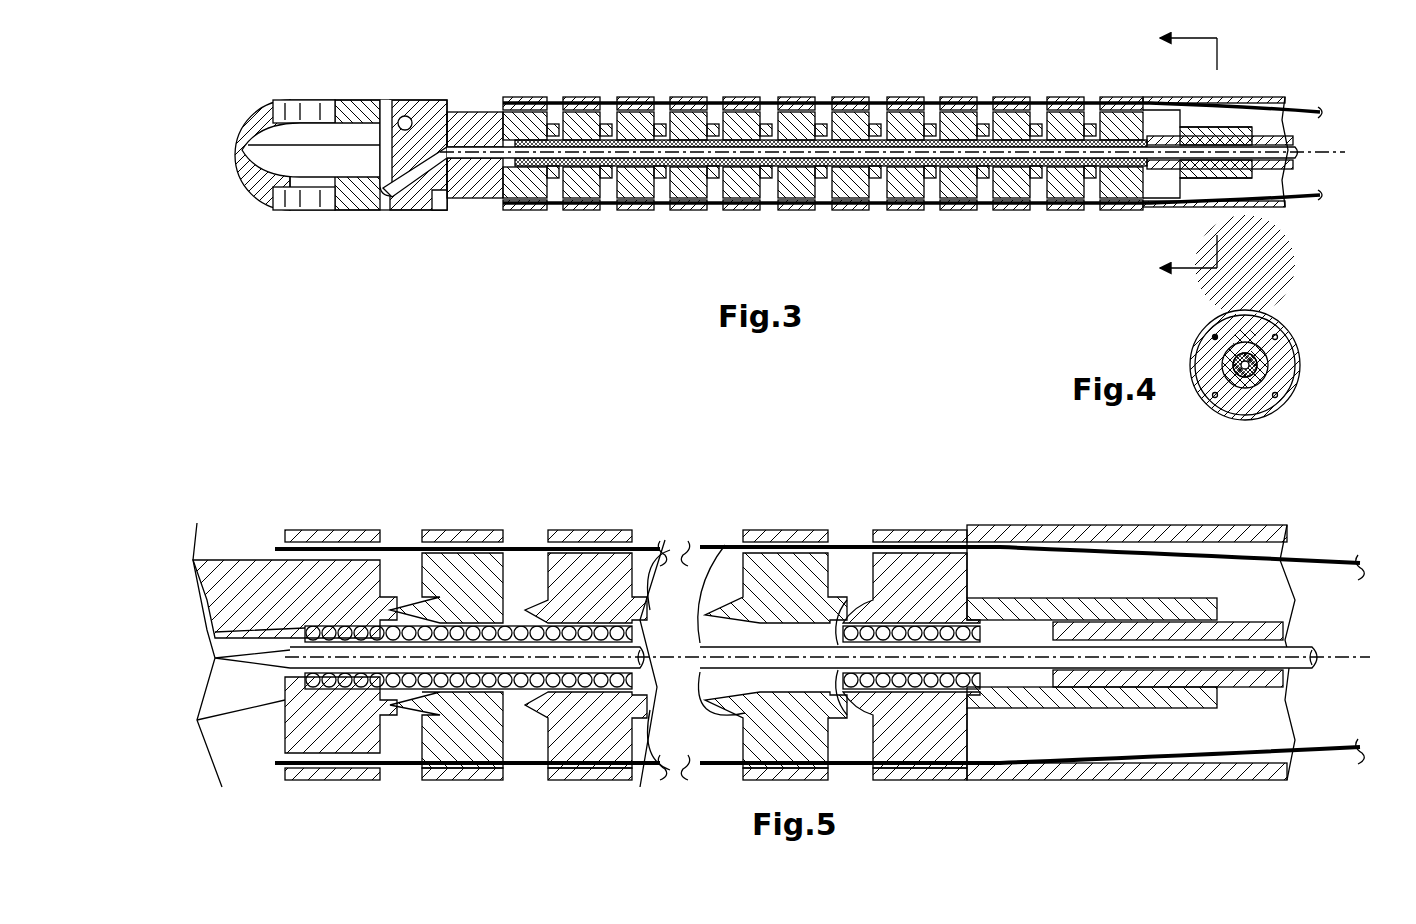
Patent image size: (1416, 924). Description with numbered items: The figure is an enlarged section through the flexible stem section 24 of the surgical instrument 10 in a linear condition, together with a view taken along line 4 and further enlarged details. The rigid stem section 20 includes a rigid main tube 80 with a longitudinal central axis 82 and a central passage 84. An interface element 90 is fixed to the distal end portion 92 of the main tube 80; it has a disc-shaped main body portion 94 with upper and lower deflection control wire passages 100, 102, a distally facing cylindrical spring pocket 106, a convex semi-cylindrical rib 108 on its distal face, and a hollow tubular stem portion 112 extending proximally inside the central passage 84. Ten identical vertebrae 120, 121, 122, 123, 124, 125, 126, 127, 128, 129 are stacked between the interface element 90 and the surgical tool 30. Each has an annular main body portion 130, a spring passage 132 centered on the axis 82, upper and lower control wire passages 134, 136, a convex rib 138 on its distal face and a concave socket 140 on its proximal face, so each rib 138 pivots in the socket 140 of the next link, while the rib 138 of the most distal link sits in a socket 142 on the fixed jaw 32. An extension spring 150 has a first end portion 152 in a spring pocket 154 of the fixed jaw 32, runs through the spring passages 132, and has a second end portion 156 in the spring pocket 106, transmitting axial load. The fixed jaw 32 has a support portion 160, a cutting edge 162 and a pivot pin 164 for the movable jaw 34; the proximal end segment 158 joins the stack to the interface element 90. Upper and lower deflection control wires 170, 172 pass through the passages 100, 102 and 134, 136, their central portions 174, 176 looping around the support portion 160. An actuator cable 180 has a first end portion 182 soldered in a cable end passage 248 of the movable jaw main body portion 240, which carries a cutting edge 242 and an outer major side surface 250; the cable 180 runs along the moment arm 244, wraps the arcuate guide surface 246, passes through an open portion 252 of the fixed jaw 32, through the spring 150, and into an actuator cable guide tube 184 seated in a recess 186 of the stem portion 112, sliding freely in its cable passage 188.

In FIG. 3, the section line 4— 4 is at (1171, 154).
In FIG. 3, the surgical instrument 10 is at (800, 78).
In FIG. 5, the surgical instrument 10 is at (905, 470).
In FIG. 3, the rigid stem section 20 is at (1232, 80).
In FIG. 5, the rigid stem section 20 is at (1247, 525).
In FIG. 3, the flexible stem section 24 is at (932, 78).
In FIG. 5, the flexible stem section 24 is at (463, 478).
In FIG. 3, the surgical tool 30 is at (310, 95).
In FIG. 3, the fixed jaw 32 is at (240, 200).
In FIG. 5, the fixed jaw 32 is at (222, 560).
In FIG. 3, the movable jaw 34 is at (238, 106).
In FIG. 3, the main tube 80 is at (1290, 100).
In FIG. 4, the main tube 80 is at (1296, 352).
In FIG. 5, the main tube 80 is at (1202, 782).
In FIG. 3, the longitudinal central axis 82 is at (1322, 142).
In FIG. 5, the longitudinal central axis 82 is at (1340, 650).
In FIG. 4, the central passage 84 is at (1215, 345).
In FIG. 5, the central passage 84 is at (1262, 720).
In FIG. 3, the interface element 90 is at (1180, 180).
In FIG. 4, the interface element 90 is at (1282, 372).
In FIG. 5, the interface element 90 is at (1182, 595).
In FIG. 5, the distal end portion 92 is at (1032, 786).
In FIG. 5, the main body portion 94 is at (935, 742).
In FIG. 5, the upper deflection control wire passages 100 is at (940, 625).
In FIG. 5, the lower deflection control wire passages 102 is at (860, 772).
In FIG. 5, the spring pocket 106 is at (985, 605).
In FIG. 5, the rib 108 is at (855, 592).
In FIG. 5, the stem portion 112 is at (1088, 605).
In FIG. 3, the vertebra 120 is at (1065, 212).
In FIG. 5, the vertebra 120 is at (790, 525).
In FIG. 3, the vertebra 121 is at (1012, 212).
In FIG. 3, the vertebra 122 is at (960, 212).
In FIG. 3, the vertebra 123 is at (905, 212).
In FIG. 3, the vertebra 124 is at (852, 212).
In FIG. 3, the vertebra 125 is at (800, 212).
In FIG. 3, the vertebra 126 is at (745, 212).
In FIG. 3, the vertebra 127 is at (690, 212).
In FIG. 3, the vertebra 128 is at (633, 212).
In FIG. 5, the vertebra 128 is at (582, 790).
In FIG. 3, the vertebra 129 is at (582, 212).
In FIG. 5, the vertebra 129 is at (458, 530).
In FIG. 5, the main body portion 130 is at (602, 580).
In FIG. 5, the spring passage 132 is at (642, 620).
In FIG. 5, the upper deflection control wire passages 134 is at (520, 595).
In FIG. 5, the lower deflection control wire passages 136 is at (375, 772).
In FIG. 5, the rib 138 is at (432, 600).
In FIG. 5, the socket 140 is at (607, 745).
In FIG. 5, the socket 142 is at (385, 608).
In FIG. 3, the extension spring 150 is at (685, 135).
In FIG. 5, the extension spring 150 is at (470, 690).
In FIG. 5, the first end portion 152 is at (312, 700).
In FIG. 3, the spring pocket 154 is at (548, 140).
In FIG. 5, the spring pocket 154 is at (320, 630).
In FIG. 3, the second end portion 156 is at (1128, 125).
In FIG. 5, the second end portion 156 is at (910, 636).
In FIG. 3, the proximal end segment 158 is at (1115, 130).
In FIG. 3, the support portion 160 is at (474, 112).
In FIG. 5, the support portion 160 is at (292, 720).
In FIG. 3, the cutting edge 162 is at (356, 128).
In FIG. 3, the pivot pin 164 is at (408, 116).
In FIG. 3, the upper deflection control wire 170 is at (722, 103).
In FIG. 4, the upper deflection control wire 170 is at (1277, 335).
In FIG. 5, the upper deflection control wire 170 is at (1322, 545).
In FIG. 3, the lower deflection control wire 172 is at (556, 208).
In FIG. 4, the lower deflection control wire 172 is at (1277, 397).
In FIG. 5, the lower deflection control wire 172 is at (1312, 766).
In FIG. 3, the central portion 174 is at (518, 100).
In FIG. 3, the central portion 176 is at (512, 214).
In FIG. 3, the actuator cable 180 is at (878, 150).
In FIG. 4, the actuator cable 180 is at (1238, 372).
In FIG. 5, the actuator cable 180 is at (1322, 668).
In FIG. 3, the first end portion 182 is at (420, 190).
In FIG. 3, the actuator cable guide tube 184 is at (1268, 172).
In FIG. 4, the actuator cable guide tube 184 is at (1238, 360).
In FIG. 5, the actuator cable guide tube 184 is at (1262, 622).
In FIG. 5, the recess 186 is at (1102, 702).
In FIG. 5, the cable passage 188 is at (1306, 640).
In FIG. 3, the main body portion 240 is at (283, 100).
In FIG. 3, the cutting edge 242 is at (250, 150).
In FIG. 3, the moment arm 244 is at (340, 190).
In FIG. 3, the guide surface 246 is at (382, 196).
In FIG. 3, the cable end passage 248 is at (300, 186).
In FIG. 3, the outer major side surface 250 is at (343, 123).
In FIG. 3, the open portion 252 is at (472, 198).